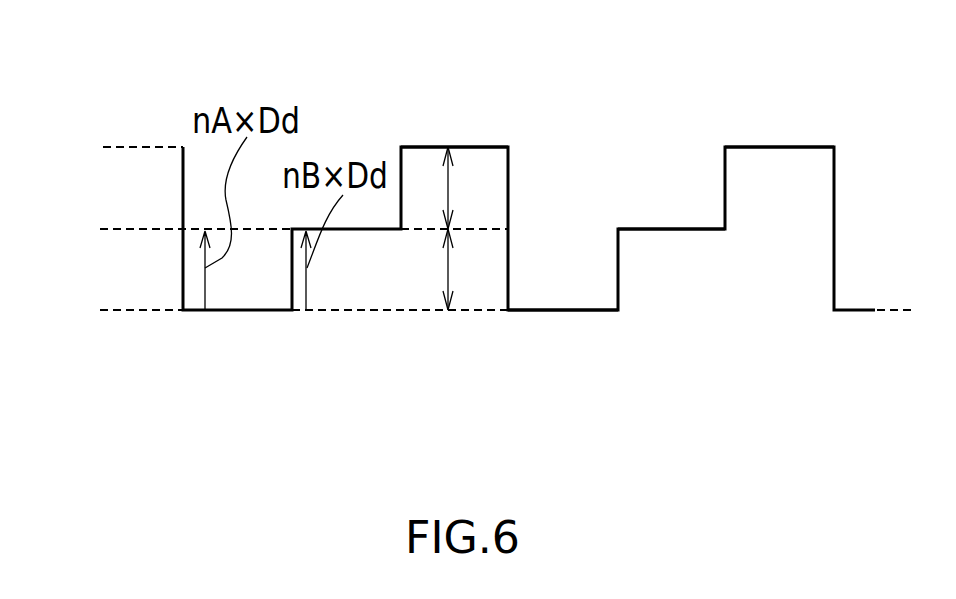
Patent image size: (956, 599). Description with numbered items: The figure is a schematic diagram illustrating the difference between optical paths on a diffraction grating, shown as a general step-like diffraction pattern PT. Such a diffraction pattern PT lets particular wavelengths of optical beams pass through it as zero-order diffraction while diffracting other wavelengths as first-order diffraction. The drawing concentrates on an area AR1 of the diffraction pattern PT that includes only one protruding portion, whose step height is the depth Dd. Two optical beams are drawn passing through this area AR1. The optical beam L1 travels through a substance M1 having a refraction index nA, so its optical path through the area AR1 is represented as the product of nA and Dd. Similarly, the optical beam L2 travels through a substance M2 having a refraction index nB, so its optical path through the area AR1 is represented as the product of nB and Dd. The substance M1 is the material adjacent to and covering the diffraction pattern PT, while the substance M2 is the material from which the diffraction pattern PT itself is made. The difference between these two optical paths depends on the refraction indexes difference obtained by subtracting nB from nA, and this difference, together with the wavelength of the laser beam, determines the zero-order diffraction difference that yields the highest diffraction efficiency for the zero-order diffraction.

The diffraction pattern PT is at (313, 66).
The area AR1 is at (86, 230).
The optical beam L1 is at (210, 348).
The optical beam L2 is at (317, 346).
The diffraction difference Dd is at (449, 188).
The refraction index nA is at (461, 123).
The refraction index nB is at (552, 348).
The substance M1 is at (753, 122).
The substance M2 is at (671, 308).